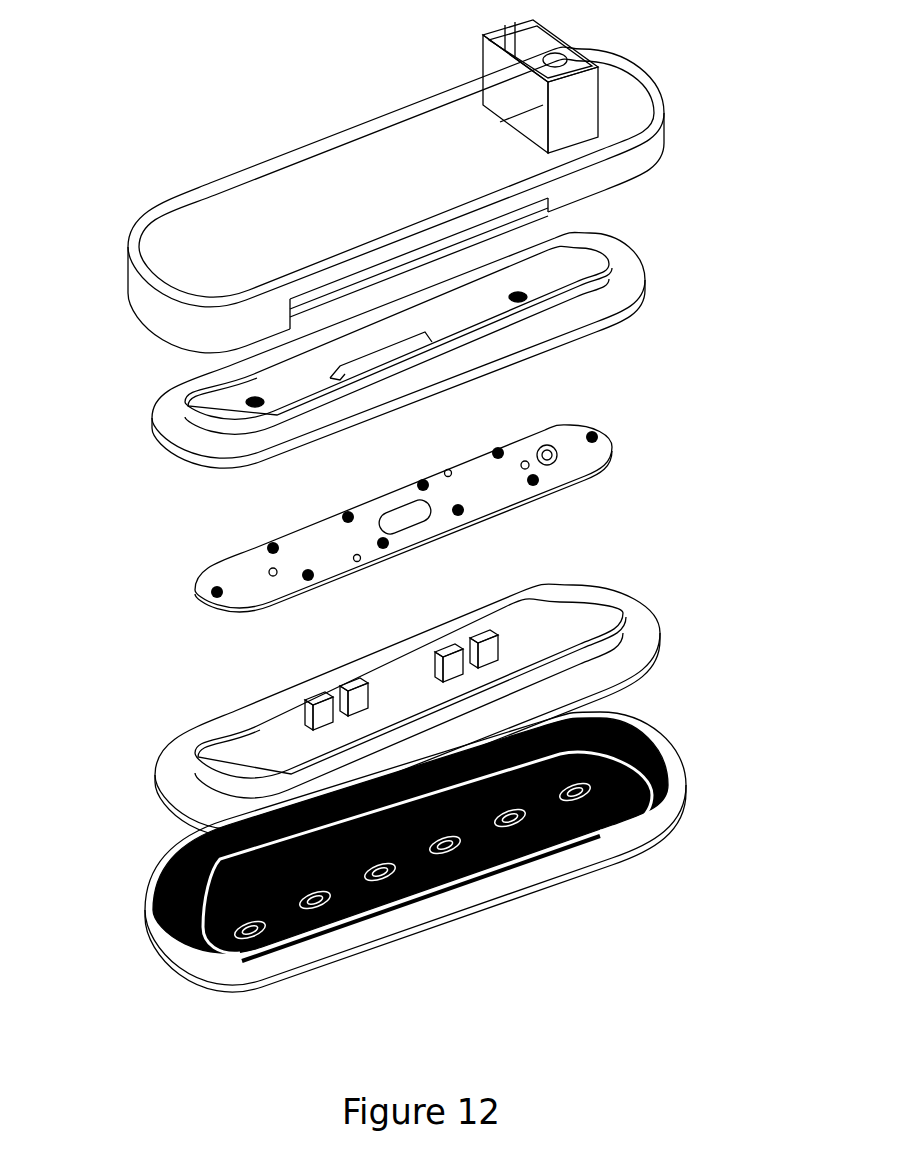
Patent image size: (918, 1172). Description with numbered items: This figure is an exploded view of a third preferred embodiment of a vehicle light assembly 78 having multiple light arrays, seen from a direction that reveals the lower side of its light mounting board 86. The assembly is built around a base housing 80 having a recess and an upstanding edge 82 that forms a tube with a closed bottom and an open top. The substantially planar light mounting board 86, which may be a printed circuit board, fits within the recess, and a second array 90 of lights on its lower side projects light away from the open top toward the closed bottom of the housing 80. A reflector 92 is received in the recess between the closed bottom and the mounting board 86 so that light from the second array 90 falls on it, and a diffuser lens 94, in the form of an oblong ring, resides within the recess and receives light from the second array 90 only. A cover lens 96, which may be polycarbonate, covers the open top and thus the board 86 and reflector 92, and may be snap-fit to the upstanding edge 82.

The vehicle light assembly 78 is at (576, 926).
The base housing 80 is at (281, 197).
The upstanding edge 82 is at (150, 307).
The light mounting board 86 is at (600, 453).
The second array of lights 90 is at (545, 488).
The reflector 92 is at (622, 310).
The diffuser lens 94 is at (647, 642).
The cover lens 96 is at (612, 843).